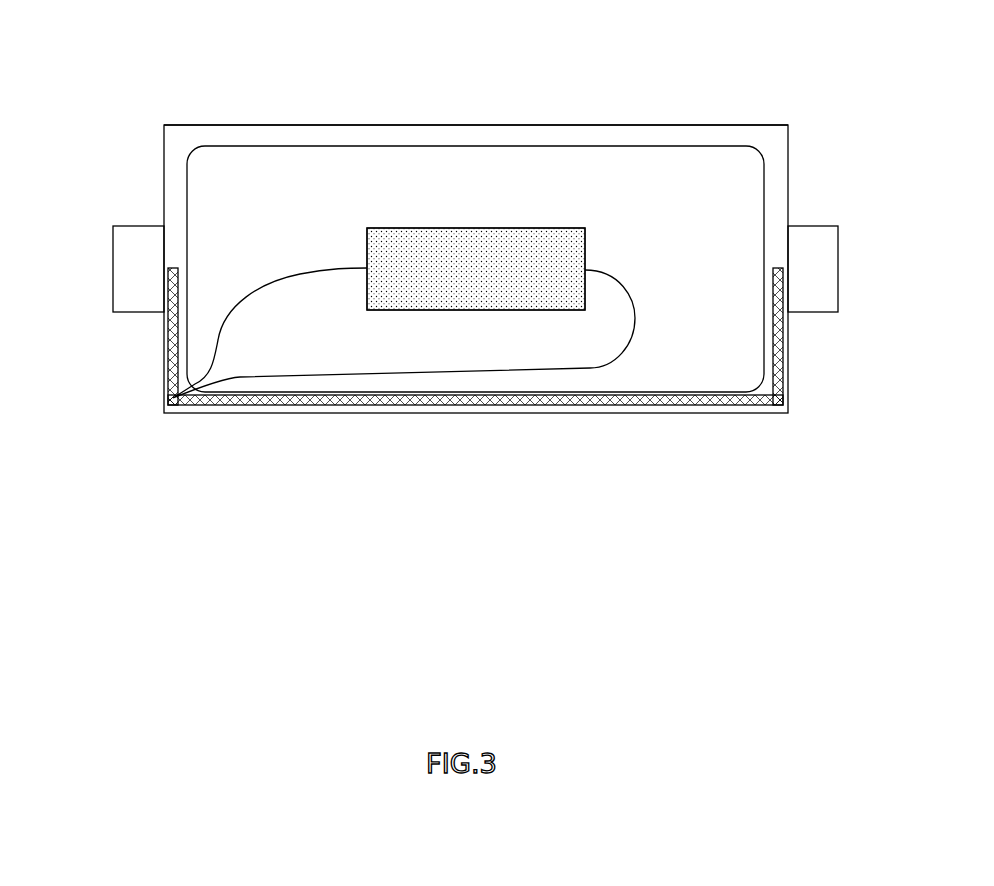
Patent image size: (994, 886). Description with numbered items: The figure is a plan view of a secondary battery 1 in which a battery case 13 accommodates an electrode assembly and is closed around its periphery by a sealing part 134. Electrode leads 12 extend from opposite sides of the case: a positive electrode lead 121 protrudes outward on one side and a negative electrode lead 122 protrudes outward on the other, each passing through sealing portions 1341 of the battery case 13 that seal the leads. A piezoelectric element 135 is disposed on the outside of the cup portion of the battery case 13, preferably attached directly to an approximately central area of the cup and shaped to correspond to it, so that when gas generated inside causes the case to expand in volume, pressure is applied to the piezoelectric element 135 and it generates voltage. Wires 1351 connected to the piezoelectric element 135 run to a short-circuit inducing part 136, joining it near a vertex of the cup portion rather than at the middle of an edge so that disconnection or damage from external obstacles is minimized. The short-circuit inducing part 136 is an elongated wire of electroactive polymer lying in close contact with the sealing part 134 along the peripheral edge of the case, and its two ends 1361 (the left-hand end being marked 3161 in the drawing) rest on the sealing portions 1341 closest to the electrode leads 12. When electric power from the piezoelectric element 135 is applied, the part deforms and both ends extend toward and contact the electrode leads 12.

The secondary battery 1 is at (461, 62).
The electrode lead 12 is at (478, 410).
The positive electrode lead 121 is at (816, 298).
The negative electrode lead 122 is at (138, 298).
The battery case 13 is at (725, 125).
The sealing part 134 is at (300, 125).
The sealing portions 1341 is at (175, 252).
The insulating layer 3161 is at (173, 283).
The ends of the short-circuit inducing part 1361 is at (780, 278).
The short-circuit inducing part 136 is at (450, 405).
The piezoelectric element 135 is at (543, 296).
The wires 1351 is at (268, 283).